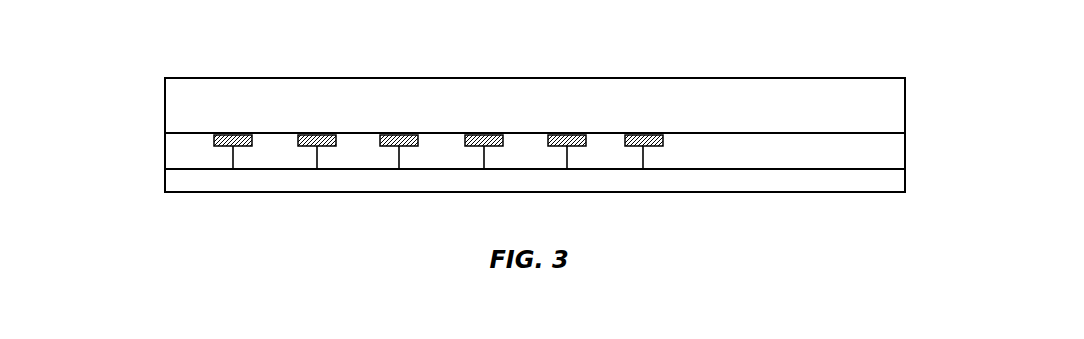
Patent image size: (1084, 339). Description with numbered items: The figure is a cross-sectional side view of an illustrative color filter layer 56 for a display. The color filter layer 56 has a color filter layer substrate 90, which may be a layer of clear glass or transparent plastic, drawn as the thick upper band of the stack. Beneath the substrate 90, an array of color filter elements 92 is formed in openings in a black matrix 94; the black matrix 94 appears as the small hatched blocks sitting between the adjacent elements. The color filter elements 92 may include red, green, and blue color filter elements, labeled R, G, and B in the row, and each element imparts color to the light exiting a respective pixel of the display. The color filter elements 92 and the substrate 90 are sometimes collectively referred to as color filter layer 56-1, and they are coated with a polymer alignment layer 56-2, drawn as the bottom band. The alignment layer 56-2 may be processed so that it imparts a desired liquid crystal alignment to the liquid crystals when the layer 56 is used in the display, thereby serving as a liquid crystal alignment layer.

The color filter layer 56 is at (501, 132).
The color filter layer 56-1 is at (501, 99).
The alignment layer 56-2 is at (204, 183).
The substrate 90 is at (665, 92).
The color filter elements 92 is at (182, 146).
The black matrix 94 is at (233, 135).